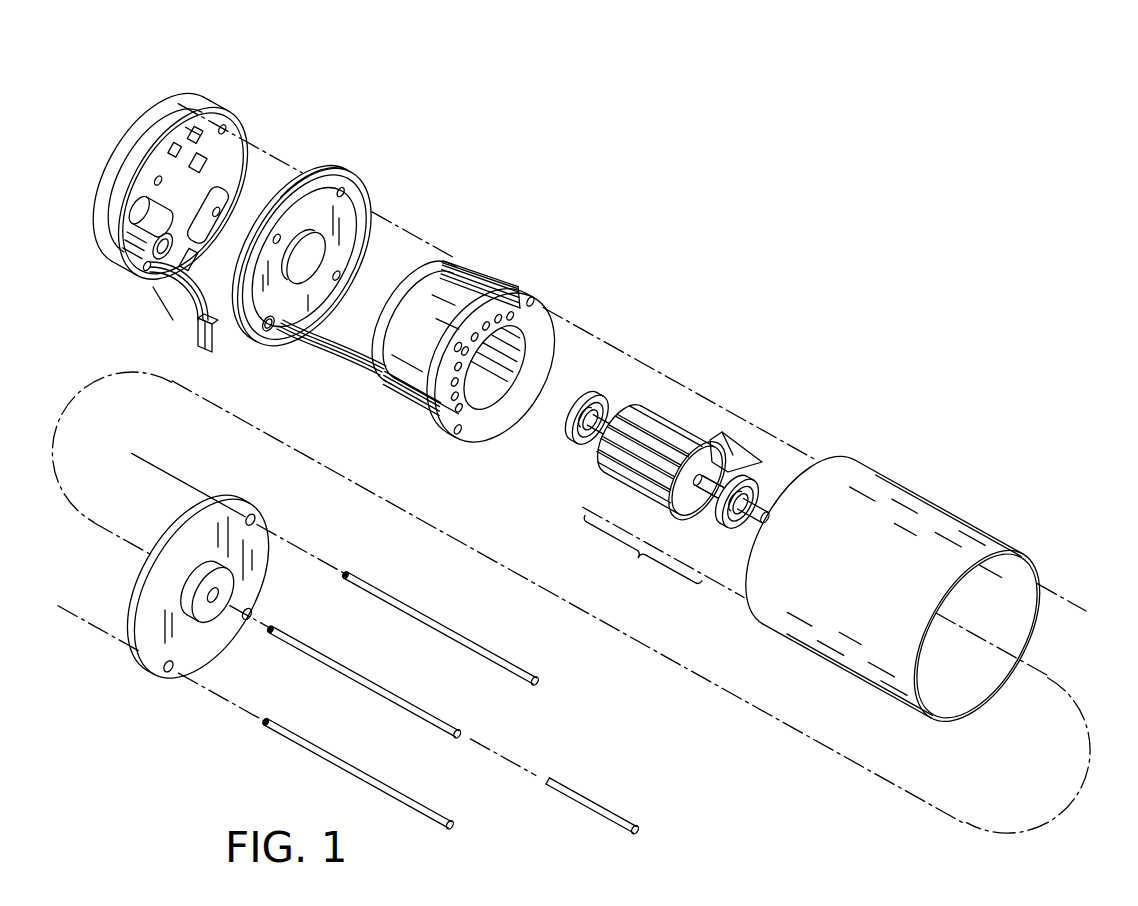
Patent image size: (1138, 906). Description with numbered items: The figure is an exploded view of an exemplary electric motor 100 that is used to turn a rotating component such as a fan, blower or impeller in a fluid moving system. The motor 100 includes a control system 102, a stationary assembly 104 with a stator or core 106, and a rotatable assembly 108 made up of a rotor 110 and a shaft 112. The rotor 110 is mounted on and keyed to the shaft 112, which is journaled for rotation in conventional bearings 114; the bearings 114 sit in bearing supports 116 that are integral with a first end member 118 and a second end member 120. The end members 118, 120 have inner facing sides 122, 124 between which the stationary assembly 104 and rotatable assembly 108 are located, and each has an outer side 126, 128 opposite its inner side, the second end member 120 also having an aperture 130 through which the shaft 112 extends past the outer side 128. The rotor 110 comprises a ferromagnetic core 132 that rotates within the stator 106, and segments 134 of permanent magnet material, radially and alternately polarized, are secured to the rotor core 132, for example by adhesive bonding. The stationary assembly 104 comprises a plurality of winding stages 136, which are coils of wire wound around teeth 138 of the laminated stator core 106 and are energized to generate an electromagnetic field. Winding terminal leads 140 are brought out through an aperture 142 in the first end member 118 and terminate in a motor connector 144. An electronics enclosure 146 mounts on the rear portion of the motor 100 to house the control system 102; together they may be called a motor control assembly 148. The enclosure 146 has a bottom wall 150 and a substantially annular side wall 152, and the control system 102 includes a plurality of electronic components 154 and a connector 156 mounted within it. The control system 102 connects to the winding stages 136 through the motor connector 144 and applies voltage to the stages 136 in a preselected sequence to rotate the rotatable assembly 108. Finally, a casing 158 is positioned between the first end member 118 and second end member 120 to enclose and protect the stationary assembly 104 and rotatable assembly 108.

The electric motor 100 is at (797, 196).
The control system 102 is at (250, 112).
The stationary assembly 104 is at (434, 445).
The stator 106 is at (478, 278).
The rotatable assembly 108 is at (660, 494).
The rotor 110 is at (705, 527).
The shaft 112 is at (750, 520).
The bearings 114 is at (600, 372).
The bearing supports 116 is at (358, 258).
The first end member 118 is at (352, 170).
The second end member 120 is at (213, 670).
The inner facing side 122 is at (265, 335).
The inner facing side 124 is at (163, 537).
The outer side 126 is at (292, 178).
The outer side 128 is at (263, 572).
The aperture 130 is at (213, 613).
The ferromagnetic core 132 is at (660, 508).
The segments 134 is at (748, 462).
The winding stages 136 is at (522, 390).
The teeth 138 is at (545, 398).
The winding terminal leads 140 is at (333, 357).
The aperture 142 is at (282, 337).
The motor connector 144 is at (203, 335).
The electronics enclosure 146 is at (200, 98).
The motor control assembly 148 is at (230, 103).
The bottom wall 150 is at (183, 265).
The side wall 152 is at (138, 140).
The electronic components 154 is at (145, 244).
The connector 156 is at (185, 263).
The casing 158 is at (937, 503).